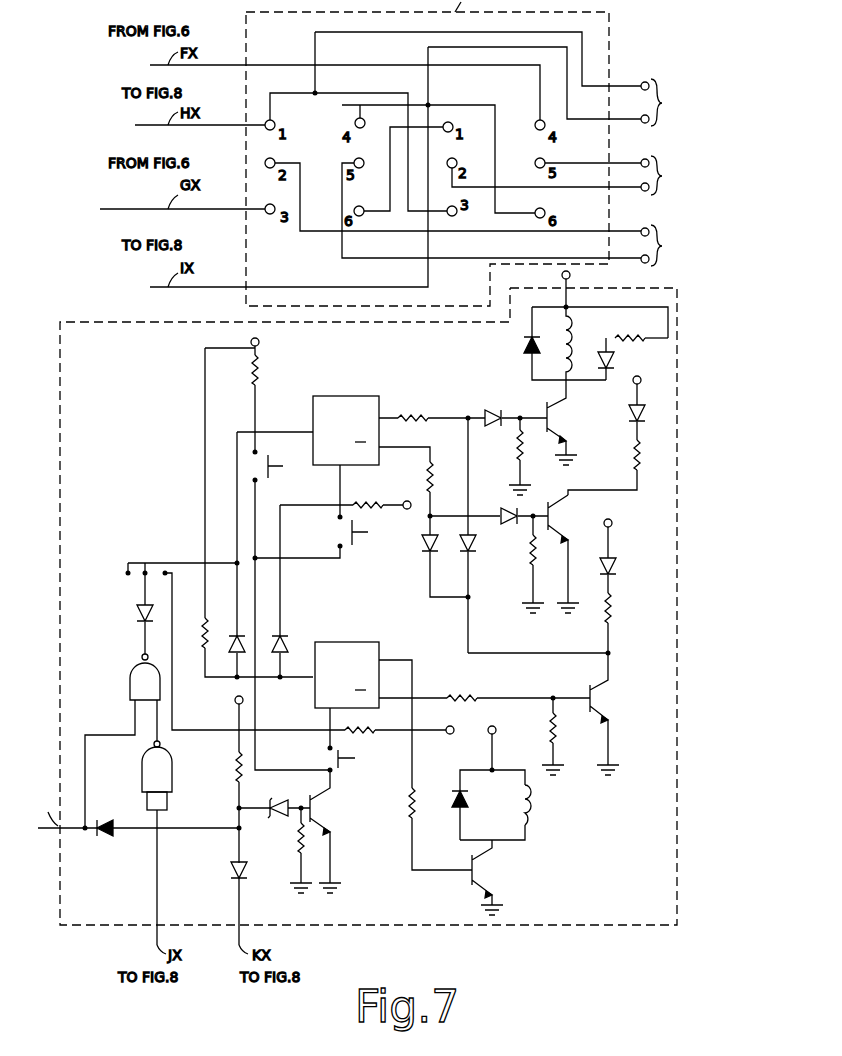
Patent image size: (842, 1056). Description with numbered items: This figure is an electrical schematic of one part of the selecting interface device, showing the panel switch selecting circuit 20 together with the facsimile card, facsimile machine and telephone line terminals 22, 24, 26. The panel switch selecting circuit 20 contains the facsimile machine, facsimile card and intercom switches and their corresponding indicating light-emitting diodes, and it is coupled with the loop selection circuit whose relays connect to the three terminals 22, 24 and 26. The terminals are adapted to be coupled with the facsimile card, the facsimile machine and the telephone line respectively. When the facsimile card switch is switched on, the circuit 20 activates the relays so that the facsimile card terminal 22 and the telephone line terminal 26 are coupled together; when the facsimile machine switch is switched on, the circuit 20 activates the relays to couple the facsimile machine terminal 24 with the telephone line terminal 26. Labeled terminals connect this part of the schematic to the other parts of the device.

The panel switch selecting circuit 20 is at (677, 358).
The facsimile card terminal 22 is at (697, 261).
The facsimile machine terminal 24 is at (697, 191).
The telephone line terminal 26 is at (697, 116).